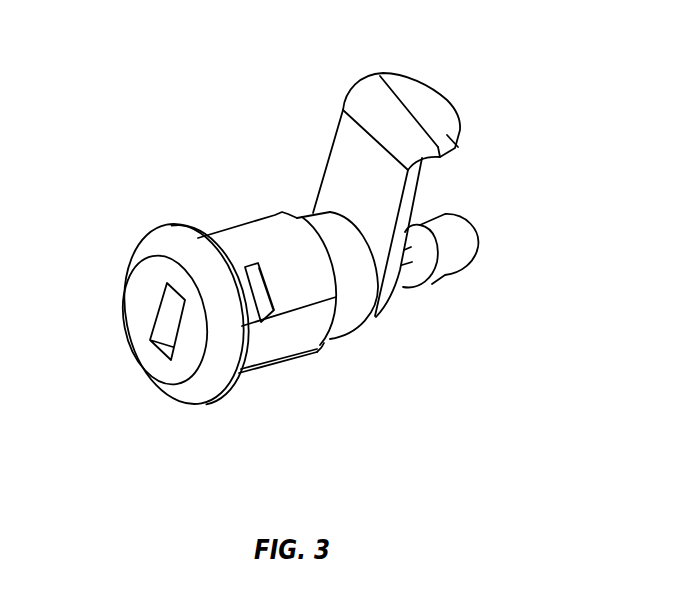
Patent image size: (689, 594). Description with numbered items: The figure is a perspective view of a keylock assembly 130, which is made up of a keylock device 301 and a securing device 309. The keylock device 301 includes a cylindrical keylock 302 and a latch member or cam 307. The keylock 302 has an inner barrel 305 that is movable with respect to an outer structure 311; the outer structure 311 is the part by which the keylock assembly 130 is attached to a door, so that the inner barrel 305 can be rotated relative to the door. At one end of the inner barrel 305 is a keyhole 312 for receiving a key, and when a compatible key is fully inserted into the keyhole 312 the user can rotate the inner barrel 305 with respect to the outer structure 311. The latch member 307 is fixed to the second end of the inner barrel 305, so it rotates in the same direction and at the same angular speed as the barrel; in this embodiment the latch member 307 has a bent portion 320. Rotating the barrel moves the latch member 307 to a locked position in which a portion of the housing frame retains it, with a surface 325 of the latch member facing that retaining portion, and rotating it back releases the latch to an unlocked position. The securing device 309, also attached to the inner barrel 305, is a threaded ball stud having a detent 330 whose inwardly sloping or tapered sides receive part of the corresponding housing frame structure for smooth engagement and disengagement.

The keylock assembly 130 is at (249, 95).
The keylock device 301 is at (401, 346).
The keylock 302 is at (145, 226).
The inner barrel 305 is at (137, 302).
The latch member or cam 307 is at (484, 146).
The securing device 309 is at (478, 234).
The outer structure 311 is at (246, 381).
The keyhole 312 is at (150, 345).
The bent portion 320 is at (457, 113).
The surface 325 is at (350, 139).
The detent 330 is at (465, 276).